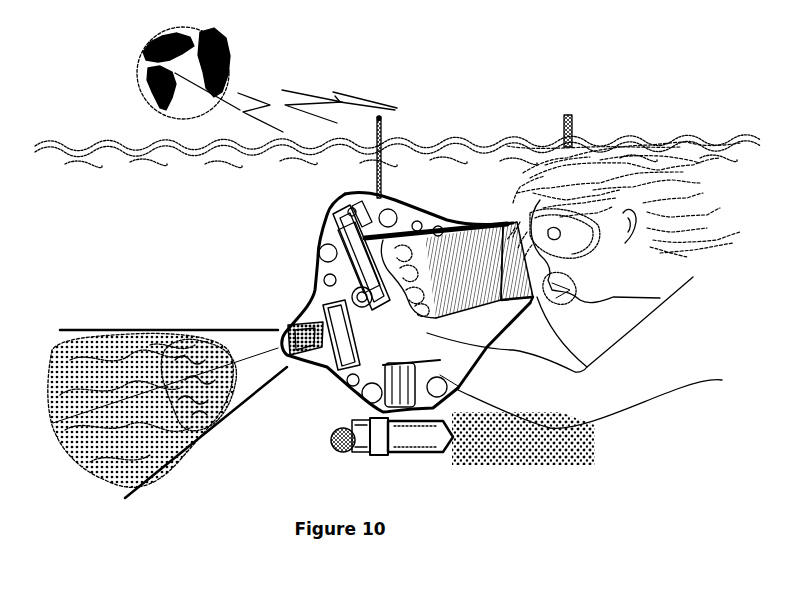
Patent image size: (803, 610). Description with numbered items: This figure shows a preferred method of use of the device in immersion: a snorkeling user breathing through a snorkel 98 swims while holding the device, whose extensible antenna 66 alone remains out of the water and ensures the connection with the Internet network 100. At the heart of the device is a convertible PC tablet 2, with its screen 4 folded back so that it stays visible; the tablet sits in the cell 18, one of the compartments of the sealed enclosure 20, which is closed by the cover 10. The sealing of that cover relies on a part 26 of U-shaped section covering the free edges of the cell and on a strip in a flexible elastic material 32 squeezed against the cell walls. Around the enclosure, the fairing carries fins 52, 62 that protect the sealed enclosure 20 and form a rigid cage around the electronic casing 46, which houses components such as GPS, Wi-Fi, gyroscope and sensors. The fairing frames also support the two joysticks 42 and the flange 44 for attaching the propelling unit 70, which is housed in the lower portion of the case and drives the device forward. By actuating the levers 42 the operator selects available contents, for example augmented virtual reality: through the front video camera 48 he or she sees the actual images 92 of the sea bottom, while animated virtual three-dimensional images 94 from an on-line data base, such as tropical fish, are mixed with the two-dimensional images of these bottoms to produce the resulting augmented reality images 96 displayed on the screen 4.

The convertible PC tablet 2 is at (370, 396).
The screen 4 is at (445, 220).
The cover 10 is at (410, 225).
The cell 18 is at (368, 409).
The sealed enclosure 20 is at (452, 235).
The U-section part 26 is at (340, 203).
The strip in a flexible elastic material 32 is at (372, 200).
The joysticks 42 is at (330, 245).
The flange 44 is at (370, 463).
The electronic casing 46 is at (303, 302).
The video camera 48 is at (283, 326).
The open-worked fins 52 is at (458, 392).
The fins 62 is at (312, 212).
The extensible antenna 66 is at (390, 135).
The propelling unit 70 is at (420, 463).
The actual images 92 is at (68, 330).
The animated virtual 3D images 94 is at (200, 330).
The augmented reality images 96 is at (140, 330).
The snorkel 98 is at (576, 118).
The Internet network 100 is at (252, 87).